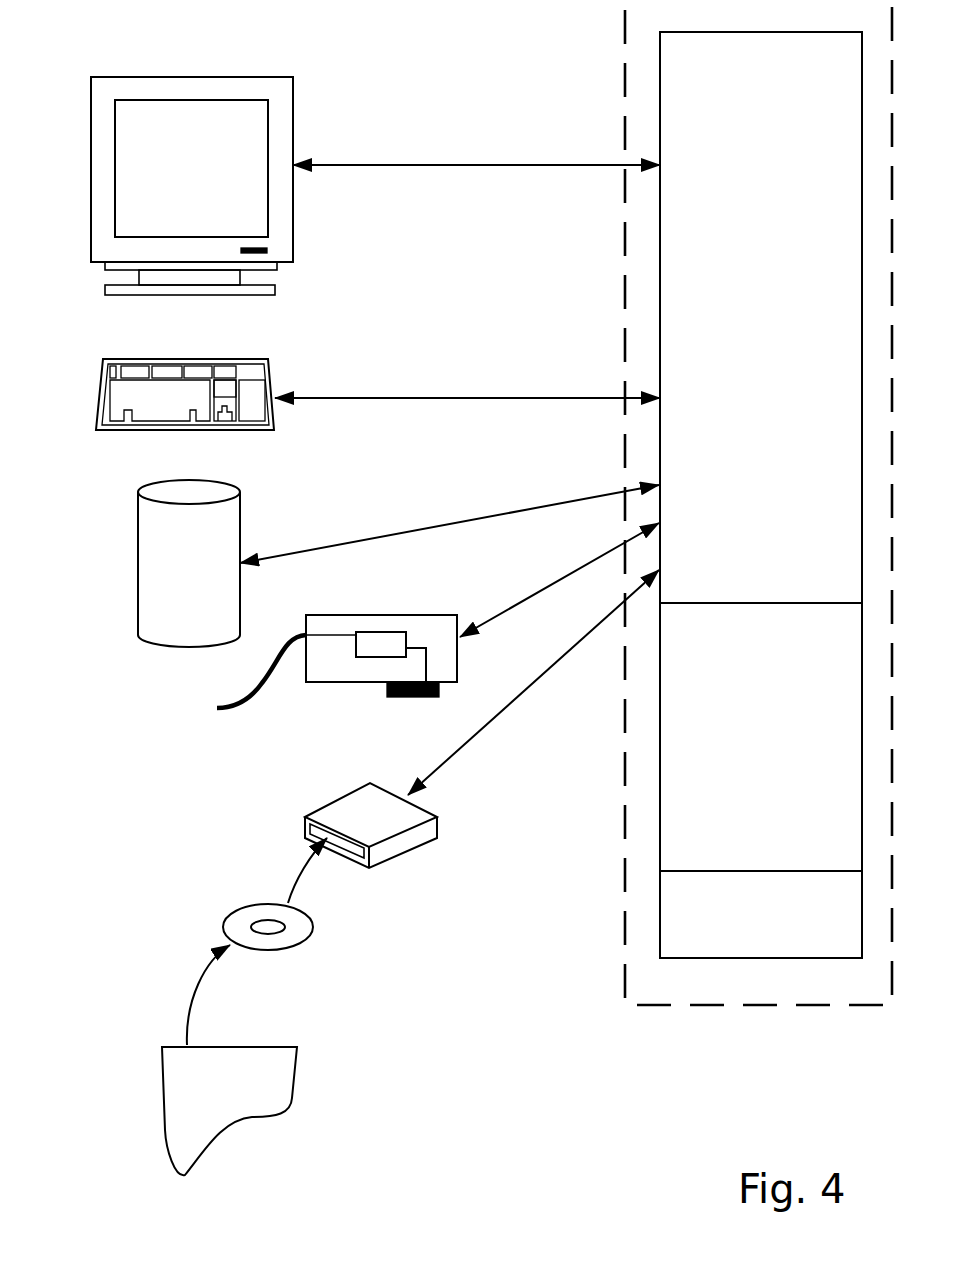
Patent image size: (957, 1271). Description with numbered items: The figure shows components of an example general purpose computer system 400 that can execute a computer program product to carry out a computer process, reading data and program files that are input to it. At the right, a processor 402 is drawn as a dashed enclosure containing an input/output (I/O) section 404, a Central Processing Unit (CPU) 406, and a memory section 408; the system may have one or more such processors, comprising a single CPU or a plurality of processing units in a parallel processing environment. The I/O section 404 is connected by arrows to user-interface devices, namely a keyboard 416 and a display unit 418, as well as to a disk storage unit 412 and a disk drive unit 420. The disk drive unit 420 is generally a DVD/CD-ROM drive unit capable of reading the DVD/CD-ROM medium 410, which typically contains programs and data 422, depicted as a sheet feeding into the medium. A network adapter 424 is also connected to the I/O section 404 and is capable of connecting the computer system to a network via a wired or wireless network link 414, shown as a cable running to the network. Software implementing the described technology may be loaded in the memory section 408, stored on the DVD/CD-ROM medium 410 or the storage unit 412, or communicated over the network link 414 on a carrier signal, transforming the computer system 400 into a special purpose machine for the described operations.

The general purpose computer system 400 is at (578, 1090).
The processor 402 is at (628, 64).
The input/output (I/O) section 404 is at (761, 317).
The central processing unit (CPU) 406 is at (761, 737).
The memory section 408 is at (761, 914).
The DVD/CD-ROM medium 410 is at (237, 905).
The disk storage unit 412 is at (136, 513).
The network link 414 is at (241, 710).
The keyboard 416 is at (142, 357).
The display unit 418 is at (157, 75).
The disk drive unit 420 is at (355, 817).
The programs and data 422 is at (298, 1070).
The network adapter 424 is at (353, 684).